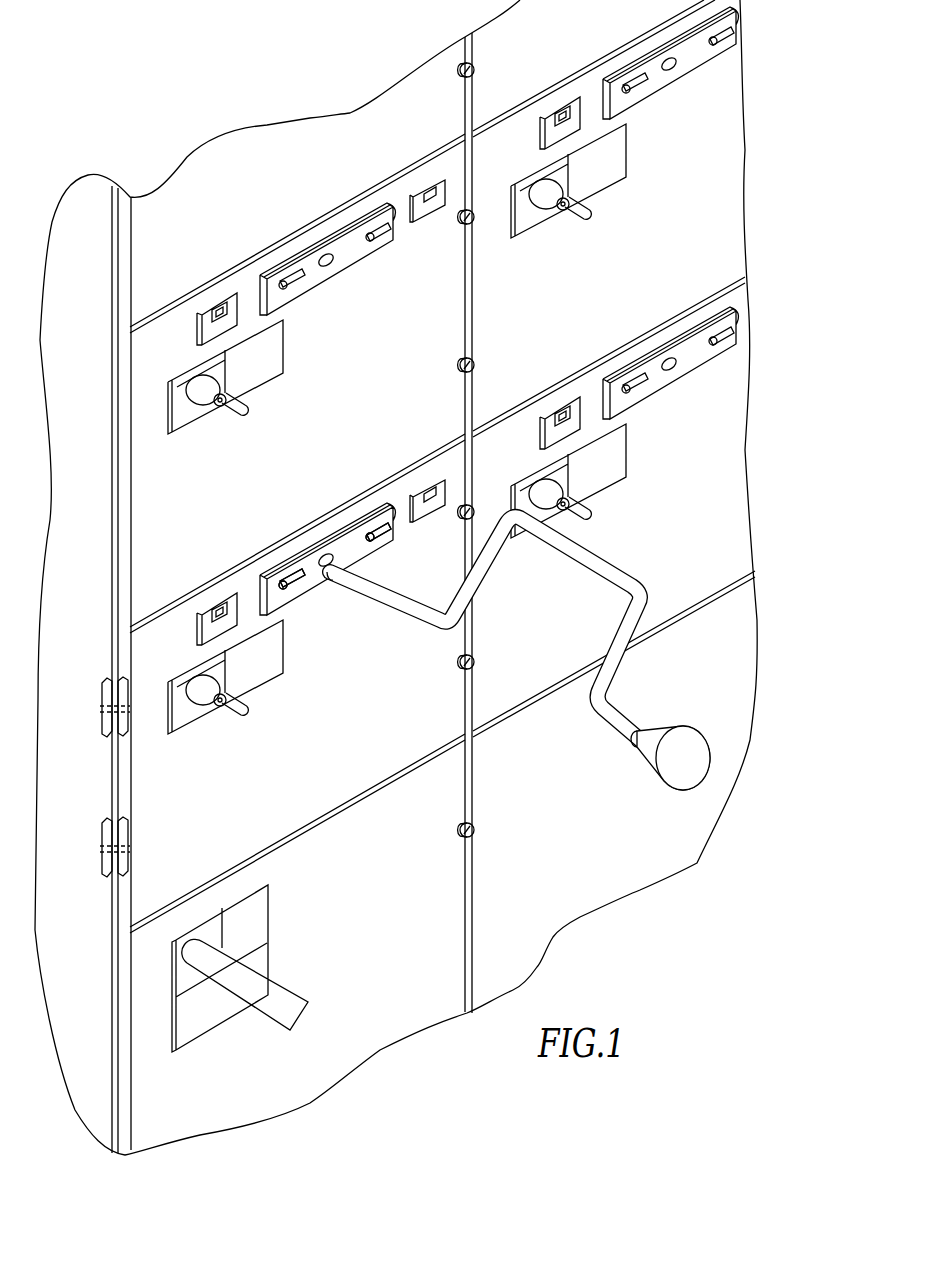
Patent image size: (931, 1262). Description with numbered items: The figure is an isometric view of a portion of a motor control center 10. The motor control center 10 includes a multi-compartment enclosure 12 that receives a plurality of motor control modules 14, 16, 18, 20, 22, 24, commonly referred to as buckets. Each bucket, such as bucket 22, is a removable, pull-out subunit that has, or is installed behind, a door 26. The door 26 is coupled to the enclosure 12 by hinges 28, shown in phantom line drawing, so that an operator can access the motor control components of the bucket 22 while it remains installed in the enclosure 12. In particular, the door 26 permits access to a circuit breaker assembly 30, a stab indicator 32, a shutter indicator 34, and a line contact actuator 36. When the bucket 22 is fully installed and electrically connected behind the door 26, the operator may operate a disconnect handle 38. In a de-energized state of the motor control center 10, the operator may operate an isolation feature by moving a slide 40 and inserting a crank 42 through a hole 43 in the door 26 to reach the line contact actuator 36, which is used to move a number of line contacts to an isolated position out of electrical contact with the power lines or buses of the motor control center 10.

The motor control center 10 is at (772, 130).
The multi-compartment enclosure 12 is at (110, 775).
The motor control module 14 is at (728, 212).
The motor control module 16 is at (120, 227).
The motor control module 18 is at (122, 972).
The motor control module 20 is at (743, 670).
The motor control module 22 is at (122, 640).
The motor control module 24 is at (728, 463).
The door 26 is at (291, 756).
The hinges 28 is at (105, 697).
The circuit breaker assembly 30 is at (267, 665).
The stab indicator 32 is at (229, 598).
The shutter indicator 34 is at (453, 478).
The line contact actuator 36 is at (275, 536).
The disconnect handle 38 is at (232, 710).
The slide 40 is at (350, 548).
The crank 42 is at (593, 557).
The hole 43 is at (350, 543).